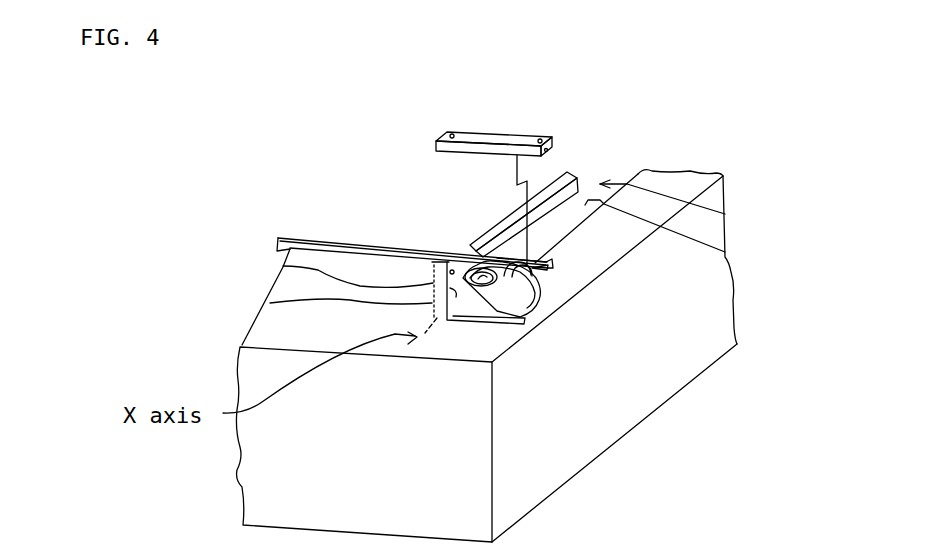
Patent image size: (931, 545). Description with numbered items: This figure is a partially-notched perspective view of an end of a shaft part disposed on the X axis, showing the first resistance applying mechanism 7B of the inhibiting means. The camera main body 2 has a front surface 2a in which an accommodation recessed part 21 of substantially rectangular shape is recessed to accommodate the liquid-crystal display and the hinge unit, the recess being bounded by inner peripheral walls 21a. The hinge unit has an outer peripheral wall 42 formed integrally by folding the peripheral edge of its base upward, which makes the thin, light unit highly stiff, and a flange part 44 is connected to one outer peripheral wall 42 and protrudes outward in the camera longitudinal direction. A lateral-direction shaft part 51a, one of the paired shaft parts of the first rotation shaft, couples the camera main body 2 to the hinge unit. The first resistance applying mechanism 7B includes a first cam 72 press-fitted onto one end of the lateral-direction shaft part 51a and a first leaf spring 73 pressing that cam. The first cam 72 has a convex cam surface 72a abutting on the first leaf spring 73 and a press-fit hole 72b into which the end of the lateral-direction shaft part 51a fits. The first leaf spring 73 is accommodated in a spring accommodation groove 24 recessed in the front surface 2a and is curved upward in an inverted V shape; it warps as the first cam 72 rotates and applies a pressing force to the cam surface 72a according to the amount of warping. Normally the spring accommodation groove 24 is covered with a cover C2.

The camera main body 2 is at (631, 421).
The front surface 2a is at (276, 338).
The accommodation recessed part 21 is at (726, 208).
The inner peripheral walls 21a is at (726, 253).
The spring accommodation groove 24 is at (270, 303).
The outer peripheral wall 42 is at (317, 240).
The flange part 44 is at (500, 252).
The lateral-direction shaft part 51a is at (283, 266).
The first cam 72 is at (758, 358).
The cam surface 72a is at (537, 313).
The press-fit hole 72b is at (522, 289).
The first leaf spring 73 is at (483, 326).
The cover C2 is at (496, 138).
The first resistance applying mechanism 7B is at (627, 504).